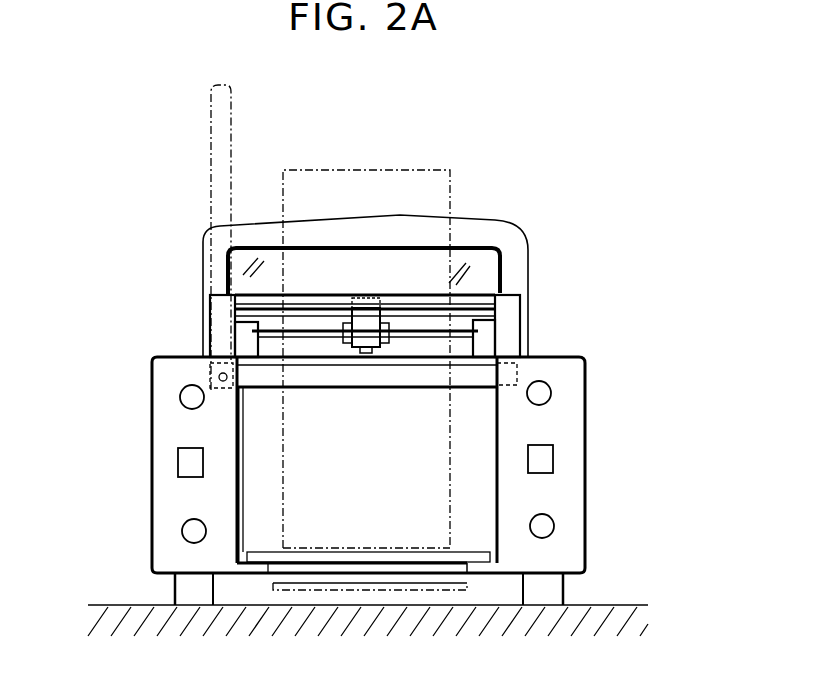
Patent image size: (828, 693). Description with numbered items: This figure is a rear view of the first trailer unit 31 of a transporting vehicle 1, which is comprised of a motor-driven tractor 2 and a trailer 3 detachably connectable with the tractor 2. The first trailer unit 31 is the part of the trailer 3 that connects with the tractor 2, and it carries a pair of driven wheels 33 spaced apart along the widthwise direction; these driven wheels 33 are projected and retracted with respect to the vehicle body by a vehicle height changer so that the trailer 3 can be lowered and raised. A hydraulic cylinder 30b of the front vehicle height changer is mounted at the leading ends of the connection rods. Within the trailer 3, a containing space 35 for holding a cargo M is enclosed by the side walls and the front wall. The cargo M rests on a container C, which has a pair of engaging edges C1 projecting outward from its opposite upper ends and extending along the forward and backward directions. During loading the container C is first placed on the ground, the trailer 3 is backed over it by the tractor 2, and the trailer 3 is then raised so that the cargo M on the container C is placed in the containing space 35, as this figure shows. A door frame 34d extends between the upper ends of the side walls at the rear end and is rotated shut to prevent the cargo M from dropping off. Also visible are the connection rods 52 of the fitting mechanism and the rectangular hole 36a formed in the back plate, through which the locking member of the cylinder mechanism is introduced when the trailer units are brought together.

The transporting vehicle 1 is at (382, 383).
The tractor 2 is at (558, 242).
The trailer 3 is at (421, 443).
The first trailer unit 31 is at (552, 357).
The hydraulic cylinder 30b is at (360, 320).
The driven wheels 33 is at (177, 589).
The door frame 34d is at (368, 389).
The containing space 35 is at (280, 478).
The rectangular hole 36a is at (551, 452).
The connection rods 52 is at (551, 394).
The engaging edges C1 is at (480, 549).
The container C is at (466, 586).
The cargo M is at (418, 170).